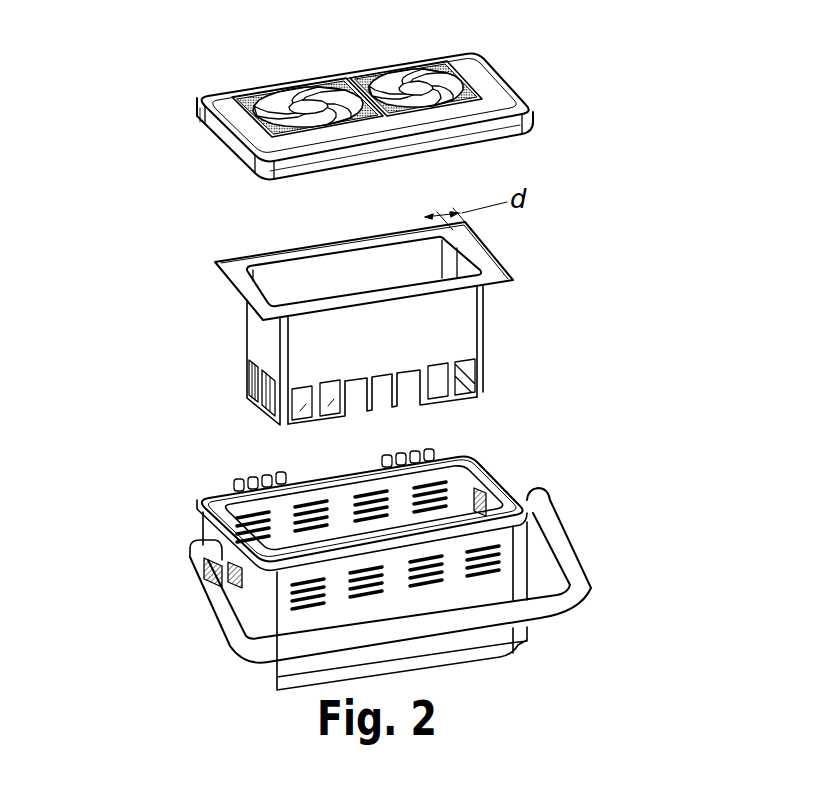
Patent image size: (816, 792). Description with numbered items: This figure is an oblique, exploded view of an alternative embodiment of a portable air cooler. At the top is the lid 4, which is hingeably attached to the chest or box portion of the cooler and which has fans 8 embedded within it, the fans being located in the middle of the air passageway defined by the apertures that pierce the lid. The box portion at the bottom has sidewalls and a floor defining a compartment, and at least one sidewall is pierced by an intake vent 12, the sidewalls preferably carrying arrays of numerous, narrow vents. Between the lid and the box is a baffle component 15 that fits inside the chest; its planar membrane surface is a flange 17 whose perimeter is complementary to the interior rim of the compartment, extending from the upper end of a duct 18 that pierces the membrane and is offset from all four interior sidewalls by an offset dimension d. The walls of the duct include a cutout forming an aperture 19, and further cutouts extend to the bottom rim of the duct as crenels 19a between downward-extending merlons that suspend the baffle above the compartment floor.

The lid 4 is at (327, 111).
The fans 8 is at (240, 110).
The intake vent 12 is at (483, 547).
The baffle component 15 is at (521, 392).
The flange 17 is at (227, 260).
The duct 18 is at (246, 324).
The aperture 19 is at (330, 405).
The crenels 19a is at (410, 399).